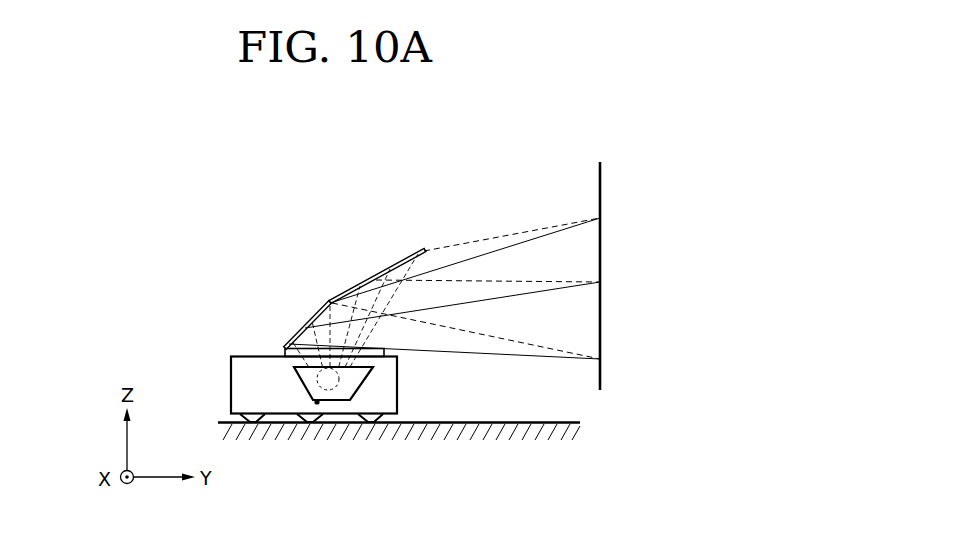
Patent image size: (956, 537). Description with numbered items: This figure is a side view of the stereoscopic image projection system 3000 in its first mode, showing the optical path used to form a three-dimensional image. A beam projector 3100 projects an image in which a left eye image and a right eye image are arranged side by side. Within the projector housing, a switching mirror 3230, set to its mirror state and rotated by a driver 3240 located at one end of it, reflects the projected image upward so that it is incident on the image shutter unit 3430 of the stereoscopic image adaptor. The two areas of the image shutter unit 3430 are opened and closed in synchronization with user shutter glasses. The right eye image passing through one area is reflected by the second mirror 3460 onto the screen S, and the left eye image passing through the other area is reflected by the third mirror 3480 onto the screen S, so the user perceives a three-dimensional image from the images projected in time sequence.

The stereoscopic image projection system 3000 is at (218, 208).
The beam projector 3100 is at (231, 383).
The switching mirror 3230 is at (361, 391).
The driver 3240 is at (316, 402).
The image shutter unit 3430 is at (384, 351).
The second mirror 3460 is at (303, 325).
The third mirror 3480 is at (395, 267).
The screen S is at (599, 189).